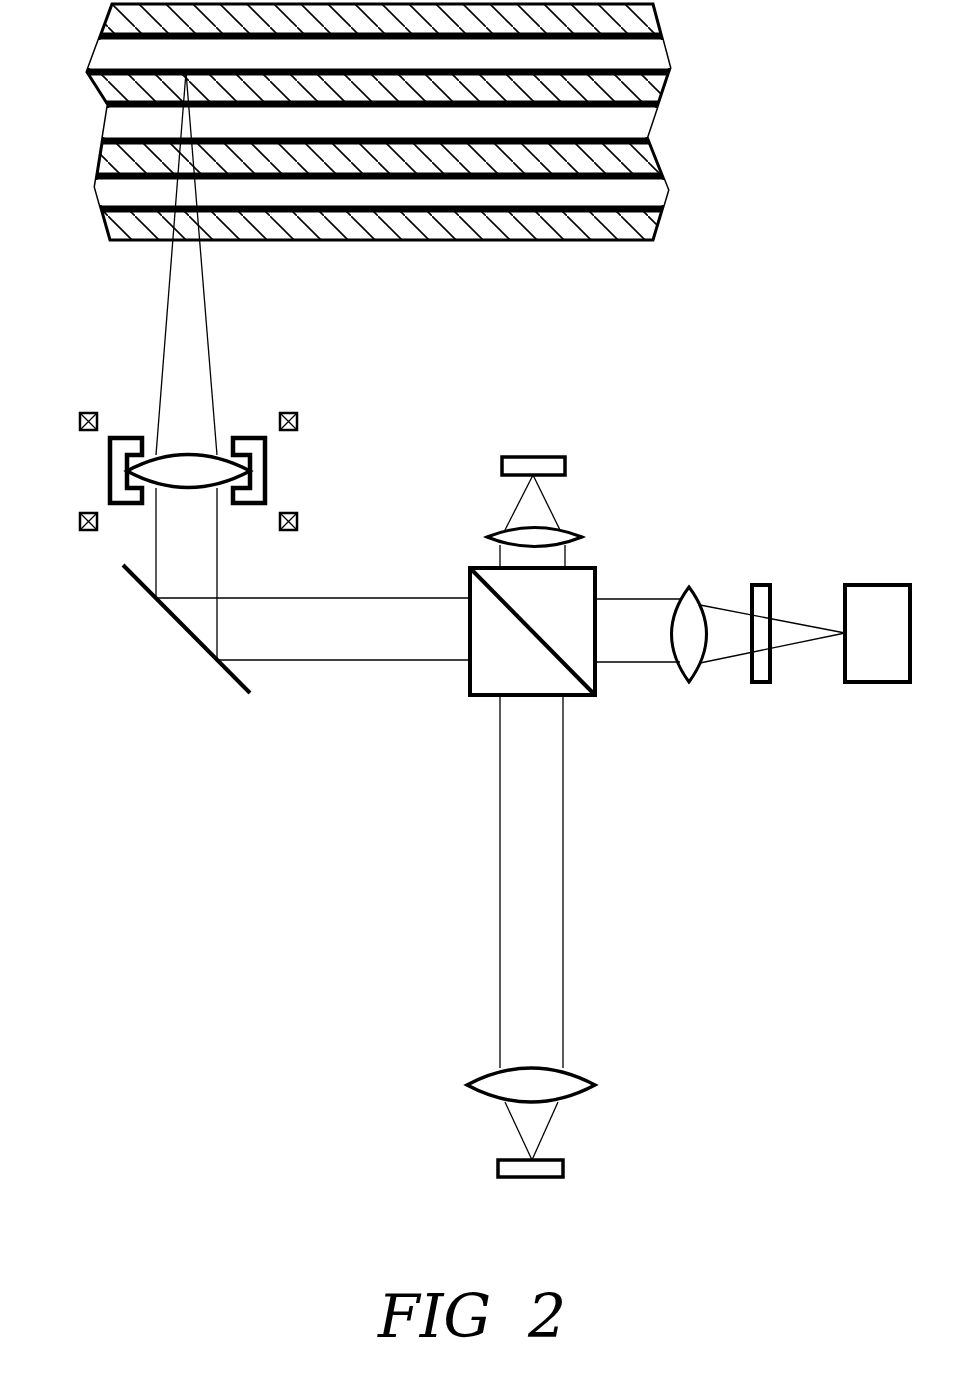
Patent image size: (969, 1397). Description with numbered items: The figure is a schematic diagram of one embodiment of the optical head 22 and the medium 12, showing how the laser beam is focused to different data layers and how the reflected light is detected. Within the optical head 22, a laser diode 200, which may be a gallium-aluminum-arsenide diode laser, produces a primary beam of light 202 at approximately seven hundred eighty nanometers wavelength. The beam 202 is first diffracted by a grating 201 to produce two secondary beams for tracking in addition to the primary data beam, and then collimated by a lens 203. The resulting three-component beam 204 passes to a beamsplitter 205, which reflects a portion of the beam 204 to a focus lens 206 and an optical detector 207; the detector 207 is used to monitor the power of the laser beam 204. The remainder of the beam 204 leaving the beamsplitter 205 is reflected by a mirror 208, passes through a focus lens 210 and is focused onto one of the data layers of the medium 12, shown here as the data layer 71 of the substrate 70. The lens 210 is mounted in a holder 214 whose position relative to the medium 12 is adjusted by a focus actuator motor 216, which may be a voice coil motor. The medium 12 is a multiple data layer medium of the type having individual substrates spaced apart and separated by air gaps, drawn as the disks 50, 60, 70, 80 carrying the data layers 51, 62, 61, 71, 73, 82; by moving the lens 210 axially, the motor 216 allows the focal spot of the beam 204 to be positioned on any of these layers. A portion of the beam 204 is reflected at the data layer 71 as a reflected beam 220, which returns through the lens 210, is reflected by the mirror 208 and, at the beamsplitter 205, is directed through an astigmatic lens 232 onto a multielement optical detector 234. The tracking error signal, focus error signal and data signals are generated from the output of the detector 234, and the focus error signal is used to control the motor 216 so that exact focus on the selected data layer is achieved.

The medium 12 is at (409, 167).
The optical head 22 is at (495, 630).
The disk 50 is at (658, 237).
The data layer 51 is at (665, 203).
The disk 60 is at (653, 155).
The data layer 61 is at (133, 137).
The data layer 62 is at (668, 185).
The substrate 70 is at (655, 100).
The data layer 71 is at (648, 125).
The data layer 73 is at (668, 68).
The disk 80 is at (655, 15).
The data layer 82 is at (670, 50).
The laser diode 200 is at (882, 585).
The grating 201 is at (757, 682).
The primary beam of light 202 is at (797, 635).
The lens 203 is at (690, 587).
The three-component beam 204 is at (200, 307).
The beamsplitter 205 is at (468, 578).
The focus lens 206 is at (487, 535).
The optical detector 207 is at (520, 457).
The mirror 208 is at (190, 637).
The focus lens 210 is at (223, 488).
The holder 214 is at (248, 436).
The focus actuator motor 216 is at (298, 421).
The reflected beam 220 is at (497, 735).
The astigmatic lens 232 is at (597, 1083).
The multielement optical detector 234 is at (565, 1170).